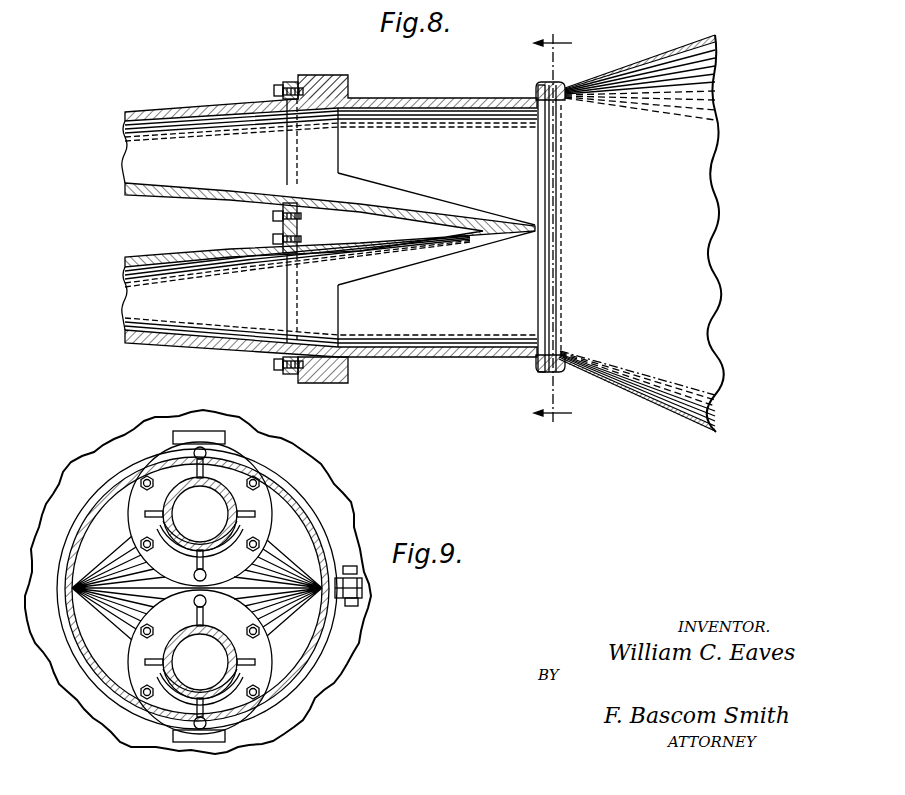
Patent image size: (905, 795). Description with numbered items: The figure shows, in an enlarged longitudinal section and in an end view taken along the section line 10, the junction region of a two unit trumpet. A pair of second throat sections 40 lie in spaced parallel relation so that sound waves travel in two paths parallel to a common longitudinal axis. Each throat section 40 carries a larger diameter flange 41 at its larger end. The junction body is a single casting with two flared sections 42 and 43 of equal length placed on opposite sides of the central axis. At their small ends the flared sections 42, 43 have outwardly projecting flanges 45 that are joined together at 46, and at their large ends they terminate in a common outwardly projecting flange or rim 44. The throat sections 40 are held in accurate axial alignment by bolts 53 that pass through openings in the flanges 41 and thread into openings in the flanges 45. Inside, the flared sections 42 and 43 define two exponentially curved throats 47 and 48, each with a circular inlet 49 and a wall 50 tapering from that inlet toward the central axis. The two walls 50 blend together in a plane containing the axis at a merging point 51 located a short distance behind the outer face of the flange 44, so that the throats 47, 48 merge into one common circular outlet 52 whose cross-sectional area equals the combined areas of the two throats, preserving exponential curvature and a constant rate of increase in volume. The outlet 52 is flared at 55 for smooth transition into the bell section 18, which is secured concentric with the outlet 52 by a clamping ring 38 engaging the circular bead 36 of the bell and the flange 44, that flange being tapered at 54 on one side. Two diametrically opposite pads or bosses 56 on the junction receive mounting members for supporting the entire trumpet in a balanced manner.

In FIG. 8, the section line 10 is at (553, 231).
In FIG. 8, the bell section 18 is at (626, 72).
In FIG. 9, the bell section 18 is at (66, 680).
In FIG. 8, the circular bead 36 is at (562, 96).
In FIG. 8, the clamping ring 38 is at (538, 372).
In FIG. 9, the clamping ring 38 is at (333, 628).
In FIG. 8, the second throat sections 40 is at (140, 202).
In FIG. 9, the second throat sections 40 is at (153, 525).
In FIG. 8, the flange 41 is at (290, 84).
In FIG. 9, the flange 41 is at (165, 455).
In FIG. 8, the flared section 42 is at (386, 100).
In FIG. 9, the flared section 42 is at (300, 527).
In FIG. 8, the flared section 43 is at (368, 358).
In FIG. 9, the flared section 43 is at (302, 652).
In FIG. 8, the flange or rim 44 is at (540, 86).
In FIG. 9, the flange or rim 44 is at (362, 588).
In FIG. 8, the flanges 45 is at (298, 78).
In FIG. 9, the joined portion 46 is at (230, 587).
In FIG. 8, the throat or chamber 47 is at (422, 120).
In FIG. 8, the throat or chamber 48 is at (420, 340).
In FIG. 8, the circular inlet 49 is at (297, 163).
In FIG. 8, the wall 50 is at (412, 208).
In FIG. 8, the merging point 51 is at (540, 230).
In FIG. 8, the common circular outlet or chamber 52 is at (542, 278).
In FIG. 8, the bolts 53 is at (274, 90).
In FIG. 9, the bolts 53 is at (141, 478).
In FIG. 8, the tapered portion 54 is at (538, 110).
In FIG. 8, the flared portion 55 is at (548, 355).
In FIG. 8, the pads or bosses 56 is at (338, 75).